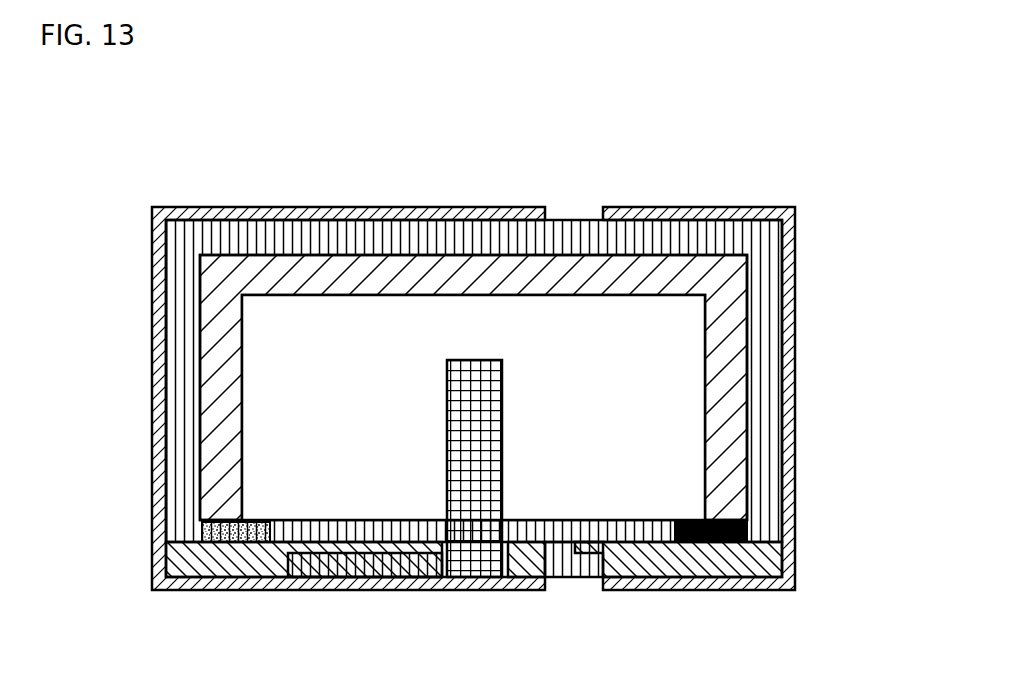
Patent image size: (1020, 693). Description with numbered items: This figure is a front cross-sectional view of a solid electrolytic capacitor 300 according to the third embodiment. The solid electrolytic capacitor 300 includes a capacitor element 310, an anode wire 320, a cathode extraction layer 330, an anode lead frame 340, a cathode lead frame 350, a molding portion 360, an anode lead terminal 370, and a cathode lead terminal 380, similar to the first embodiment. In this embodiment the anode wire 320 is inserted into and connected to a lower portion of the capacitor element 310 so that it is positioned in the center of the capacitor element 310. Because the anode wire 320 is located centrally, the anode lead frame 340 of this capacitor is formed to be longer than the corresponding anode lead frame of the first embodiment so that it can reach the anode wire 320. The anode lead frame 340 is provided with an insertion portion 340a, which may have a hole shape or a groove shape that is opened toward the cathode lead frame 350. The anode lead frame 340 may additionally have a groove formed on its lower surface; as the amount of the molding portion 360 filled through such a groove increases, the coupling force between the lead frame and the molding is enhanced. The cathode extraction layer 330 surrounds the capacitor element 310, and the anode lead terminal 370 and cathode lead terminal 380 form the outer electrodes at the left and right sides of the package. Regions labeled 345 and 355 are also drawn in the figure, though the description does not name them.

The solid electrolytic capacitor 300 is at (752, 183).
The capacitor element 310 is at (425, 322).
The anode wire 320 is at (472, 552).
The cathode extraction layer 330 is at (577, 268).
The anode lead frame 340 is at (258, 565).
The insertion portion 340a is at (425, 565).
The bonding layer 345 is at (228, 538).
The cathode lead frame 350 is at (737, 565).
The bonding layer 355 is at (672, 535).
The molding portion 360 is at (767, 398).
The anode lead terminal 370 is at (158, 305).
The cathode lead terminal 380 is at (793, 303).